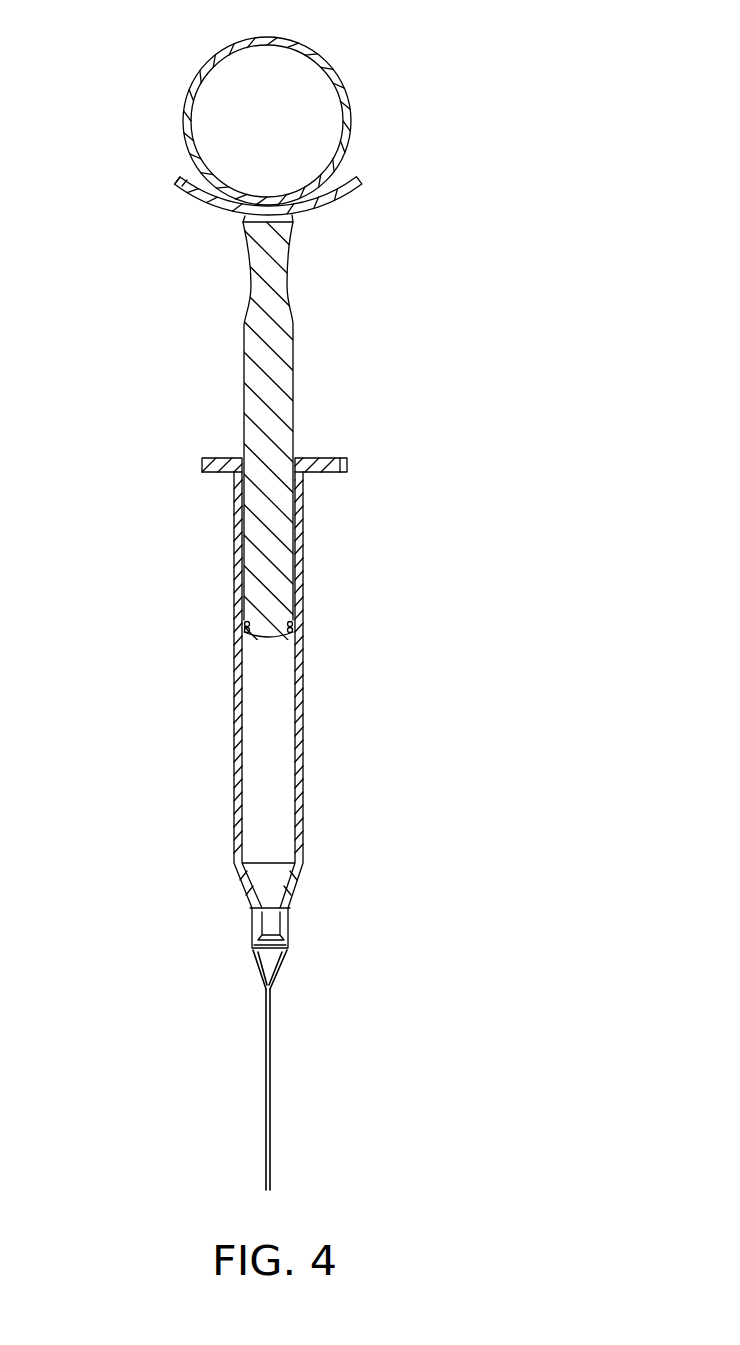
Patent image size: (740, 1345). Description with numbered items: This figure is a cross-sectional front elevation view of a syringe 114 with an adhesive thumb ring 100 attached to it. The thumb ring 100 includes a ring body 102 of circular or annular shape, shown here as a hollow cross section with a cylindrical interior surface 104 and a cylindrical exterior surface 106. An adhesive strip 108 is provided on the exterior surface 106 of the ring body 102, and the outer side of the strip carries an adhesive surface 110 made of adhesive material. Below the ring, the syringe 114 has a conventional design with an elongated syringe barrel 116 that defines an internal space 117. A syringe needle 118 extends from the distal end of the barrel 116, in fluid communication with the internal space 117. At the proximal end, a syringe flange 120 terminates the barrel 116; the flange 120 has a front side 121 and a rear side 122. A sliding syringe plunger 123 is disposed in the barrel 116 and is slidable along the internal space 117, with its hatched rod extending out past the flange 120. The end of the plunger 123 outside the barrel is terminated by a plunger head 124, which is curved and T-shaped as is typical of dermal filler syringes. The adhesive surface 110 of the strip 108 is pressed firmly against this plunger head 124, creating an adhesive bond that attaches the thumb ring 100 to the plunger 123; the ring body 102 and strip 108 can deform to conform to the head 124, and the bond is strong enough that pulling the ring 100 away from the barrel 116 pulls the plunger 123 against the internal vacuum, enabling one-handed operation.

The adhesive thumb ring 100 is at (176, 50).
The ring body 102 is at (313, 52).
The interior surface 104 is at (183, 130).
The exterior surface 106 is at (187, 88).
The adhesive strip 108 is at (331, 200).
The adhesive surface 110 is at (297, 220).
The syringe 114 is at (216, 717).
The syringe barrel 116 is at (234, 667).
The internal space 117 is at (263, 756).
The syringe needle 118 is at (272, 1110).
The syringe flange 120 is at (202, 463).
The front side 121 is at (229, 475).
The rear side 122 is at (215, 457).
The syringe plunger 123 is at (259, 288).
The plunger head 124 is at (189, 197).